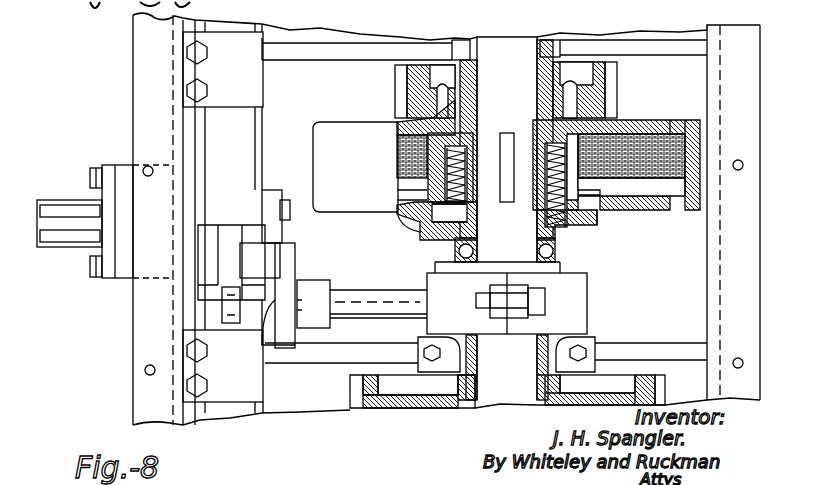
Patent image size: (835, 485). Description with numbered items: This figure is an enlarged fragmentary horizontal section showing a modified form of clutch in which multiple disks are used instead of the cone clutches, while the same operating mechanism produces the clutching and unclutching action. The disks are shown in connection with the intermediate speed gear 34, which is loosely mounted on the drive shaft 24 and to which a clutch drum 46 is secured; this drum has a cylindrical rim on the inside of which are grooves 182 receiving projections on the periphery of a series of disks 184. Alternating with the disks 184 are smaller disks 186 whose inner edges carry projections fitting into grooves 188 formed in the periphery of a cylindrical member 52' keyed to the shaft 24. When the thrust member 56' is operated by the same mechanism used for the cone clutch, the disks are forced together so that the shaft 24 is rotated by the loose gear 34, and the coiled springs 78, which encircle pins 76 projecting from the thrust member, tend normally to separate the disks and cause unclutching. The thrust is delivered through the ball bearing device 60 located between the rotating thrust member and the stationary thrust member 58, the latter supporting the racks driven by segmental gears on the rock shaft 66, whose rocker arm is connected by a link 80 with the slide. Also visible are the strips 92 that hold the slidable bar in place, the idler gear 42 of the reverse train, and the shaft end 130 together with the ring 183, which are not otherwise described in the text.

The drive shaft 24 is at (530, 38).
The intermediate speed gear 34 is at (617, 84).
The idler gear 42 is at (357, 400).
The drum 46 is at (700, 128).
The cylindrical member 52' is at (370, 167).
The thrust member 56' is at (601, 226).
The thrust member 58 is at (580, 297).
The ball bearing device 60 is at (550, 256).
The rock shaft 66 is at (378, 292).
The pins 76 is at (445, 222).
The coiled springs 78 is at (420, 210).
The link 80 is at (296, 276).
The strips 92 is at (243, 40).
The shaft end 130 is at (53, 213).
The grooves 182 is at (683, 130).
The ring 183 is at (42, 9).
The disks 184 is at (685, 150).
The smaller disks 186 is at (700, 170).
The grooves 188 is at (582, 186).